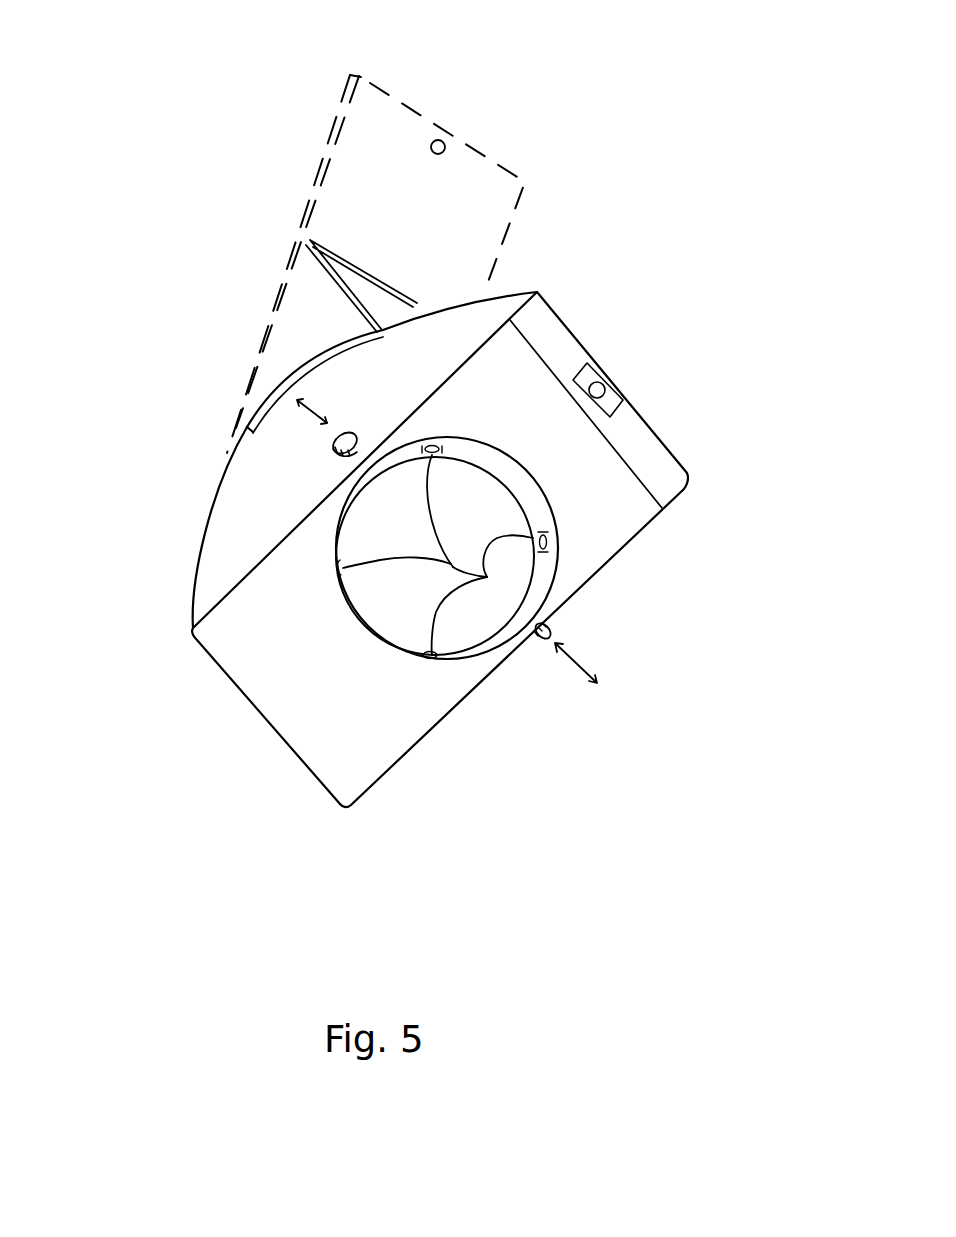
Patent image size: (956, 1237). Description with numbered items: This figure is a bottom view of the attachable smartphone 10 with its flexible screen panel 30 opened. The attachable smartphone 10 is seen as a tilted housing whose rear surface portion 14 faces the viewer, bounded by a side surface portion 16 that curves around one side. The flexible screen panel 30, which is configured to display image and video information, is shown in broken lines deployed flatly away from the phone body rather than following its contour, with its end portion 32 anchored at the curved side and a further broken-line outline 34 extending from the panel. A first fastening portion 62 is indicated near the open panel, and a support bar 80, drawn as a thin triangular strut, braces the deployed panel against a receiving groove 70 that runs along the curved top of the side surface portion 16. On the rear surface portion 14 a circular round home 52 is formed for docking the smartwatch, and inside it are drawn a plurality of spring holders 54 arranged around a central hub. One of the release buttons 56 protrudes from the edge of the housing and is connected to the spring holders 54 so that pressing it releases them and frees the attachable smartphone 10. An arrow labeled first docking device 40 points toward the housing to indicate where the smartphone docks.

The attachable smartphone 10 is at (771, 80).
The rear surface portion 14 is at (413, 728).
The side surface portion 16 is at (227, 537).
The flexible screen panel 30 is at (373, 132).
The end portion 32 is at (227, 462).
The cover in open position 34 is at (386, 82).
The first docking device 40 is at (337, 618).
The round home 52 is at (483, 505).
The spring holders 54 is at (490, 578).
The release buttons 56 is at (540, 645).
The first fastening portion 62 is at (443, 140).
The receiving groove 70 is at (320, 353).
The support bar 80 is at (325, 262).